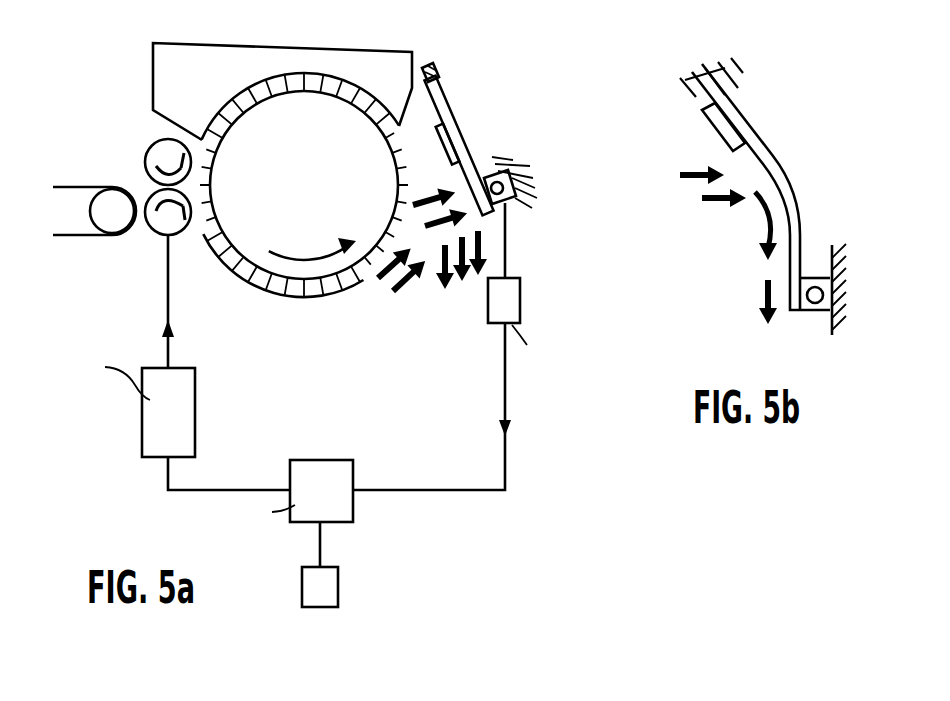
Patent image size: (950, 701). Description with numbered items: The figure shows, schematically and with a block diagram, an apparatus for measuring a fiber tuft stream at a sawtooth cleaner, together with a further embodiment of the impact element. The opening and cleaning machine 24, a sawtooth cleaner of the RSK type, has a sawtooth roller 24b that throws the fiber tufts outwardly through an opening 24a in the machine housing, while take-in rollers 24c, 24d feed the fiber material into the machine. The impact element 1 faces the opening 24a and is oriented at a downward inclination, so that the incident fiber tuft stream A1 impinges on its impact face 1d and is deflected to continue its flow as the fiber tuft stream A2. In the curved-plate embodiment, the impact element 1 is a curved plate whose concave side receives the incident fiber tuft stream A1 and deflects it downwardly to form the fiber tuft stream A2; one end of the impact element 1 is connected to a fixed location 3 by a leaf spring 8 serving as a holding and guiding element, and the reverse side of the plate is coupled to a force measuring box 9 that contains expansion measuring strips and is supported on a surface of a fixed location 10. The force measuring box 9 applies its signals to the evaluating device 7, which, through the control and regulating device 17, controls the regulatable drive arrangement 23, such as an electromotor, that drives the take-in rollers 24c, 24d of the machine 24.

In FIG. 5A, the opening and cleaning machine 24 is at (414, 52).
In FIG. 5A, the opening 24a is at (375, 283).
In FIG. 5A, the sawtooth roller 24b is at (230, 260).
In FIG. 5A, the take-in roller 24c is at (153, 225).
In FIG. 5A, the take-in roller 24d is at (155, 153).
In FIG. 5A, the impact element 1 is at (460, 158).
In FIG. 5B, the impact element 1 is at (770, 172).
In FIG. 5B, the impact face 1d is at (790, 268).
In FIG. 5B, the fixed location 3 is at (690, 92).
In FIG. 5A, the evaluating device 7 is at (513, 305).
In FIG. 5B, the leaf spring 8 is at (740, 135).
In FIG. 5A, the force measuring box 9 is at (513, 167).
In FIG. 5B, the force measuring box 9 is at (815, 310).
In FIG. 5B, the fixed location 10 is at (834, 262).
In FIG. 5A, the control and regulating device 17 is at (350, 510).
In FIG. 5A, the regulatable drive arrangement 23 is at (145, 418).
In FIG. 5A, the incident fiber tuft stream A1 is at (398, 290).
In FIG. 5B, the incident fiber tuft stream A1 is at (697, 178).
In FIG. 5A, the reflected fiber tuft stream A2 is at (450, 287).
In FIG. 5B, the reflected fiber tuft stream A2 is at (760, 288).